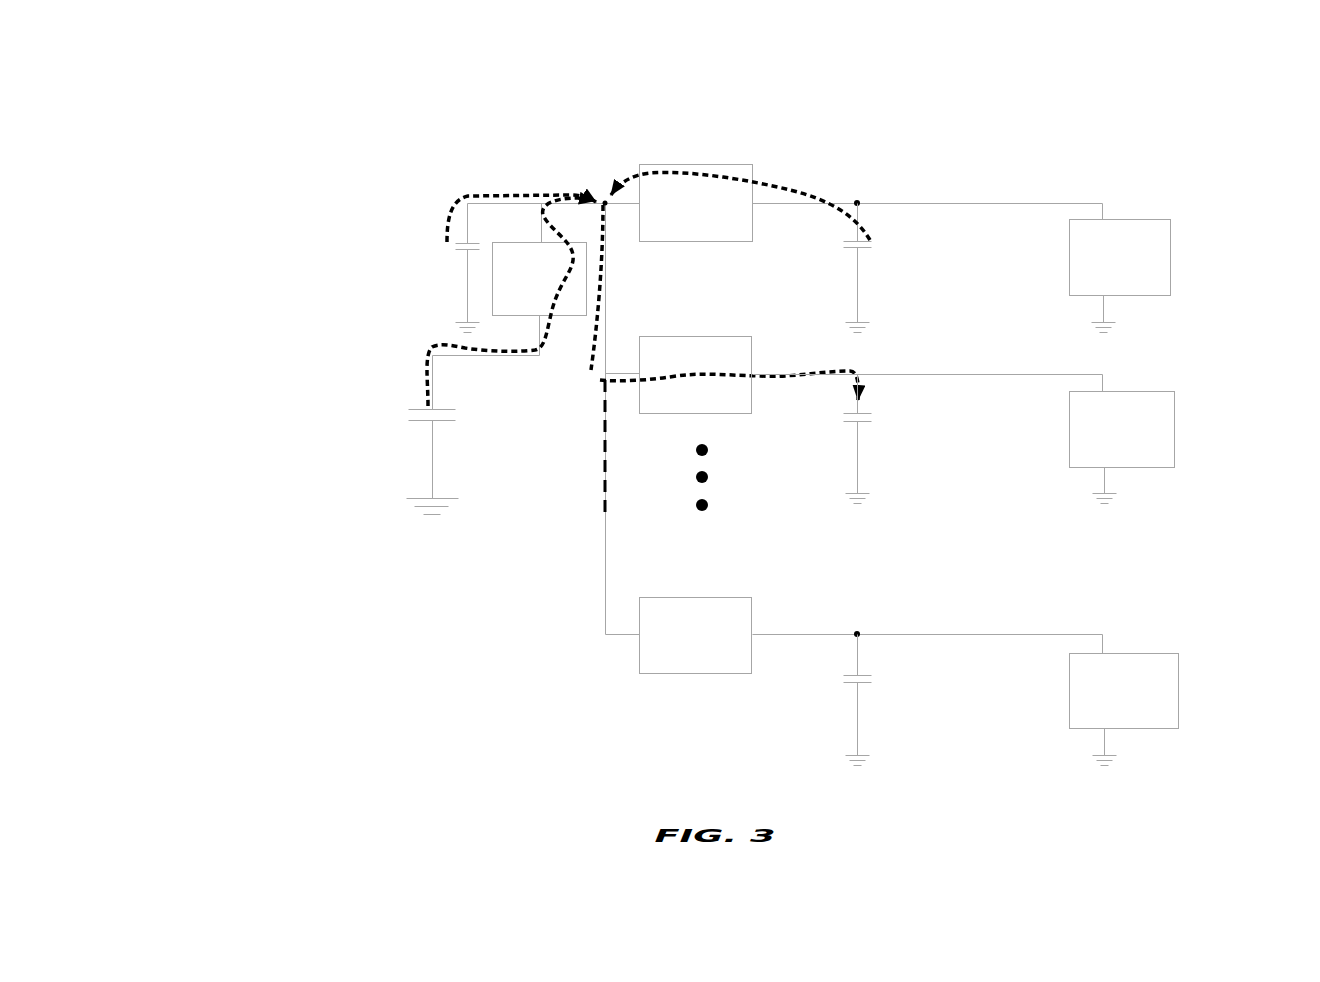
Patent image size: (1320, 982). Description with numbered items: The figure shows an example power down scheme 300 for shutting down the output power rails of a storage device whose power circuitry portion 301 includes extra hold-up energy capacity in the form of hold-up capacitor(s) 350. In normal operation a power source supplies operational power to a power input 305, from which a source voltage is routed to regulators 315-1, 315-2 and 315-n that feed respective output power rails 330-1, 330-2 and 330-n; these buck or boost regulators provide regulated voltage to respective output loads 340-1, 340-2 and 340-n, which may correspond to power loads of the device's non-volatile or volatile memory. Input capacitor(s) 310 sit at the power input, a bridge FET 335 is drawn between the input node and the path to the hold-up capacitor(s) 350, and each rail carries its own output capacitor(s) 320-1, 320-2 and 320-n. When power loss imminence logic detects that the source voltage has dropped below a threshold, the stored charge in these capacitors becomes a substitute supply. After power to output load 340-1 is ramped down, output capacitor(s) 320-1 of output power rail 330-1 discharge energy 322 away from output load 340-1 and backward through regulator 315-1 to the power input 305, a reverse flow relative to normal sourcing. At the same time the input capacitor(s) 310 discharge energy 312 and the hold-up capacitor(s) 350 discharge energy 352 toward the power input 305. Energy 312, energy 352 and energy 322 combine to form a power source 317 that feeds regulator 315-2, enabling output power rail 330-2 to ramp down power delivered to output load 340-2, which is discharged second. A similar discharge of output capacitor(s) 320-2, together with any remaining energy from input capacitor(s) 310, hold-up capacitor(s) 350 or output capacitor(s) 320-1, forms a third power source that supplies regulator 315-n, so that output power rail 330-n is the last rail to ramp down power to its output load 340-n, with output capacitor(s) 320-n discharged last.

The power down scheme 300 is at (856, 50).
The power circuitry portion 301 is at (352, 642).
The power input 305 is at (601, 196).
The input capacitor(s) 310 is at (442, 245).
The energy 312 is at (444, 205).
The regulator 315-1 is at (696, 203).
The regulator 315-2 is at (696, 375).
The regulator 315-n is at (696, 636).
The power source 317 is at (586, 373).
The output capacitor(s) 320-1 is at (886, 244).
The output capacitor(s) 320-2 is at (886, 416).
The output capacitor(s) 320-n is at (886, 674).
The energy 322 is at (838, 184).
The output power rail 330-1 is at (1049, 195).
The output power rail 330-2 is at (1089, 369).
The output power rail 330-n is at (1075, 630).
The bridge FET 335 is at (540, 279).
The output load 340-1 is at (1120, 276).
The output load 340-2 is at (1122, 448).
The output load 340-n is at (1124, 710).
The hold-up capacitor(s) 350 is at (400, 412).
The energy 352 is at (418, 367).